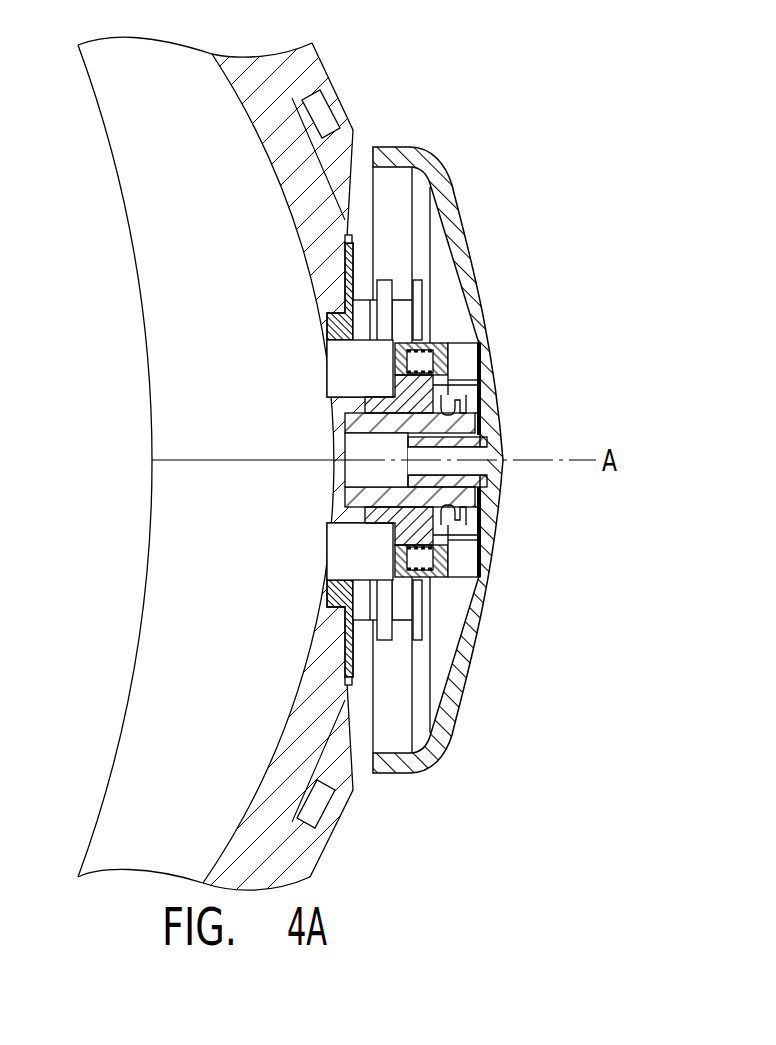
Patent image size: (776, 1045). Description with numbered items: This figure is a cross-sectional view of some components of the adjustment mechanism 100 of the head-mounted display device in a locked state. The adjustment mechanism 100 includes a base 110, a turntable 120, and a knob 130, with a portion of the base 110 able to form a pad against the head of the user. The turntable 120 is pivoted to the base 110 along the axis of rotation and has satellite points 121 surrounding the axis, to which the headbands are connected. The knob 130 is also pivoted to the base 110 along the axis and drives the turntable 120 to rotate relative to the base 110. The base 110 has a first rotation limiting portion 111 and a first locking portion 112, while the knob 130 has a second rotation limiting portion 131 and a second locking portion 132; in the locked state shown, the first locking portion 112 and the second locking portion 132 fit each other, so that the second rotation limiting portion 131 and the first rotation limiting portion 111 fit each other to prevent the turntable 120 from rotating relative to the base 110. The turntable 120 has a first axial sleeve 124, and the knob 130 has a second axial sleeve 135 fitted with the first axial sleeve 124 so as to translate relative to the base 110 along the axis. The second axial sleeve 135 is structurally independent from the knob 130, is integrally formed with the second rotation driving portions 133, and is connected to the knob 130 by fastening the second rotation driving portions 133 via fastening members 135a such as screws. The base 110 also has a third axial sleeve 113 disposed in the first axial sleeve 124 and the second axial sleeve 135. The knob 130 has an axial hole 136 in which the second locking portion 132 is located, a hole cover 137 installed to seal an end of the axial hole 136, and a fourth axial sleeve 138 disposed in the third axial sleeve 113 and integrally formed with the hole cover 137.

The adjustment mechanism 100 is at (641, 100).
The base 110 is at (301, 70).
The first rotation limiting portion 111 is at (356, 516).
The first locking portion 112 is at (480, 548).
The third axial sleeve 113 is at (455, 528).
The turntable 120 is at (343, 308).
The satellite points 121 is at (386, 300).
The first axial sleeve 124 is at (363, 381).
The knob 130 is at (477, 292).
The second rotation limiting portion 131 is at (395, 560).
The second locking portion 132 is at (458, 548).
The second rotation driving portion 133 is at (366, 352).
The second axial sleeve 135 is at (470, 380).
The fastening members 135a is at (418, 362).
The axial hole 136 is at (460, 444).
The hole cover 137 is at (487, 405).
The fourth axial sleeve 138 is at (445, 494).